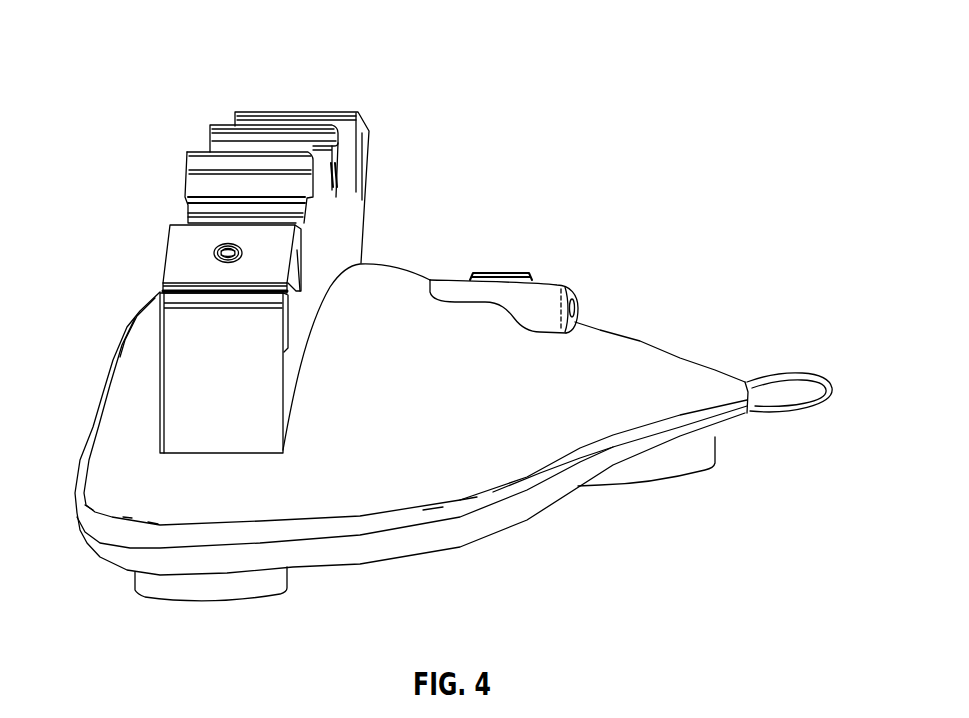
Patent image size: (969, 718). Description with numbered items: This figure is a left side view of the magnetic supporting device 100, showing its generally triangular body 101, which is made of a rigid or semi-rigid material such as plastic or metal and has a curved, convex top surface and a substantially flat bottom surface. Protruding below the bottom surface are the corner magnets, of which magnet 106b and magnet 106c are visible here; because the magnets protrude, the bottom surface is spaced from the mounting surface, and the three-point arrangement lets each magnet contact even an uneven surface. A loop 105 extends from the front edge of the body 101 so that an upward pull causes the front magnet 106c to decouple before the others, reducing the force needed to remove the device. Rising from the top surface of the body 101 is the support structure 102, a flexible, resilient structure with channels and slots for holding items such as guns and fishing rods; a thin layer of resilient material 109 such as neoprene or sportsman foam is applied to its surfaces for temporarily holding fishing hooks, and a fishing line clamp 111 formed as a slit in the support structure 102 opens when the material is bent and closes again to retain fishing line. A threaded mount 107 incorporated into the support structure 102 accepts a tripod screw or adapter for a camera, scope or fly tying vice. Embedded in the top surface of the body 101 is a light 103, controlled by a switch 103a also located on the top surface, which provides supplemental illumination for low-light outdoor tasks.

The magnetic supporting device 100 is at (116, 40).
The body 101 is at (627, 463).
The support structure 102 is at (185, 162).
The light 103 is at (567, 287).
The switch 103a is at (500, 272).
The loop 105 is at (778, 378).
The magnet 106b is at (270, 583).
The magnet 106c is at (717, 438).
The threaded mount 107 is at (213, 255).
The resilient material 109 is at (160, 323).
The fishing line clamp 111 is at (340, 189).